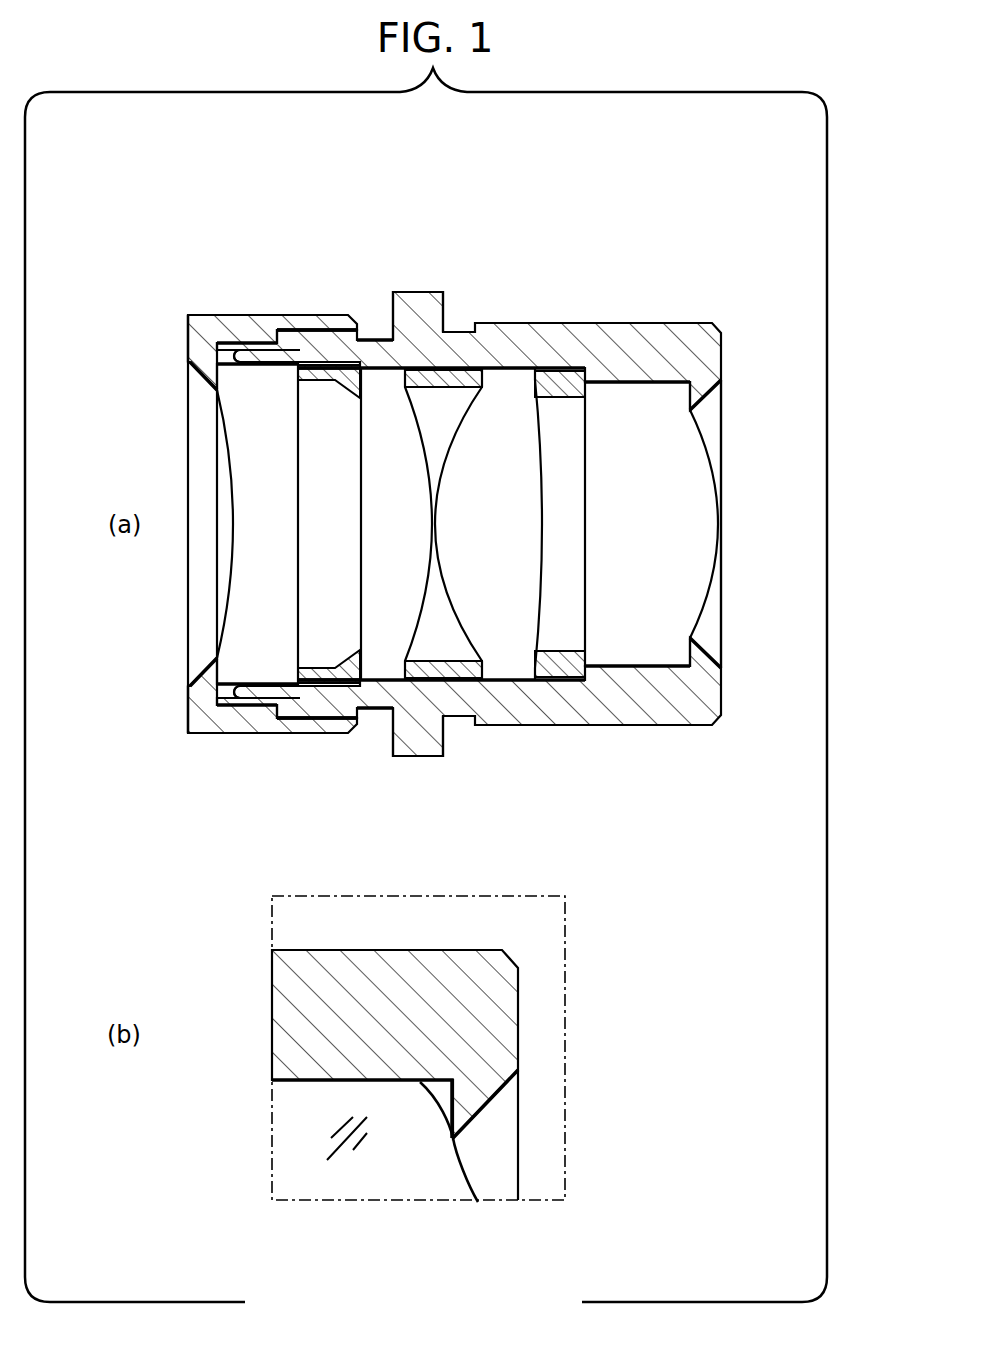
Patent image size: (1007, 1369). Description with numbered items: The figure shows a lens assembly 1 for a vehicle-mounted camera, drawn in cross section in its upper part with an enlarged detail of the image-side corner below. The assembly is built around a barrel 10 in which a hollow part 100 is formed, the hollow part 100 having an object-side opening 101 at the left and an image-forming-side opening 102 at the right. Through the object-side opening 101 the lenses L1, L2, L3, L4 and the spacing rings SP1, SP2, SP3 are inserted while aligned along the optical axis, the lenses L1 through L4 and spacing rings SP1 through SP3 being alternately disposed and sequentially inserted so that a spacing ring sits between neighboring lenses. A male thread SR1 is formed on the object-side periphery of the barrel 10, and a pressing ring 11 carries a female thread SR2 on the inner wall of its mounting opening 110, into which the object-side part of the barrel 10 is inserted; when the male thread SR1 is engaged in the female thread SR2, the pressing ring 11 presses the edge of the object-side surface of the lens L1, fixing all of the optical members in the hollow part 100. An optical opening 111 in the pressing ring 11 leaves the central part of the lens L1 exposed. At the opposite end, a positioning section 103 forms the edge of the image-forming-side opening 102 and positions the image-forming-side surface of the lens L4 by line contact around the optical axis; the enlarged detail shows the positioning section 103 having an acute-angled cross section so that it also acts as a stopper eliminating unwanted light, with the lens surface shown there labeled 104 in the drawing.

The lens assembly 1 is at (449, 232).
The barrel 10 is at (562, 330).
The pressing ring 11 is at (232, 317).
The hollow part 100 is at (510, 378).
The object-side opening 101 is at (238, 362).
The image-forming-side opening 102 is at (721, 392).
The positioning section 103 is at (692, 416).
The lens 104 is at (410, 1205).
The mounting opening 110 is at (368, 337).
The optical opening 111 is at (190, 366).
The male thread SR1 is at (336, 382).
The female thread SR2 is at (338, 348).
The spacing ring SP1 is at (317, 384).
The spacing ring SP2 is at (440, 386).
The spacing ring SP3 is at (559, 386).
The lens L1 is at (283, 577).
The lens L2 is at (383, 640).
The lens L3 is at (502, 690).
The lens L4 is at (633, 633).